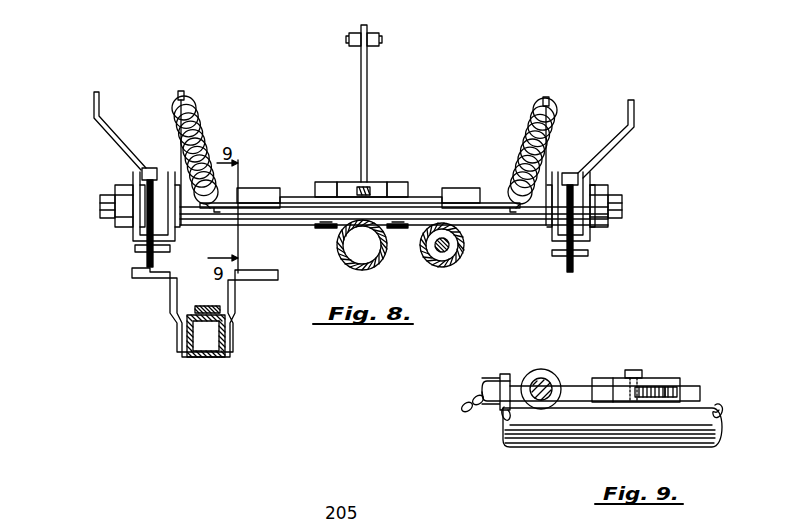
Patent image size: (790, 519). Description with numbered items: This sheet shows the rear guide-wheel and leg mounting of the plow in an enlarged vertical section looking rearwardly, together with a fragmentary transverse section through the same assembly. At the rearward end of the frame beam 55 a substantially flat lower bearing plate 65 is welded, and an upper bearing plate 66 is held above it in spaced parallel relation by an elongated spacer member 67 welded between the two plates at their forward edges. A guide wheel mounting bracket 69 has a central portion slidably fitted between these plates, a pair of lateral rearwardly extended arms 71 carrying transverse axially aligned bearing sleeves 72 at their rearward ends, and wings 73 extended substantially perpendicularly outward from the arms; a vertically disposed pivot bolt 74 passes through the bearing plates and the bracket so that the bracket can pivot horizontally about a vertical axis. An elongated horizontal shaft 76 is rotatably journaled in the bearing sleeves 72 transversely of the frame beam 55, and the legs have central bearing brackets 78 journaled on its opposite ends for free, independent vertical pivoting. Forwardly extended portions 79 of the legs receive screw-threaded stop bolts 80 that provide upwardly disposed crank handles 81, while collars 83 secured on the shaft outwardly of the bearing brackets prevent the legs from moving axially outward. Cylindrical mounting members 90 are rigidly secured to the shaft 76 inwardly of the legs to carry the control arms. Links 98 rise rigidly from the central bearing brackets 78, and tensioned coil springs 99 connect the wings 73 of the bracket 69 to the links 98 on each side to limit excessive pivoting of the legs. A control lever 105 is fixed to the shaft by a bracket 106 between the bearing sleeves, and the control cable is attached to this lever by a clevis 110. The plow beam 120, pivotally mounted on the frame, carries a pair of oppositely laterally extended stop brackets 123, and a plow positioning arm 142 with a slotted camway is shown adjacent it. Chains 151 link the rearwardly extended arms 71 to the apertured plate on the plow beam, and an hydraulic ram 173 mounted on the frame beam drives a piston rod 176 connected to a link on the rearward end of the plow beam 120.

In FIG. 8, the frame beam 55 is at (377, 257).
In FIG. 9, the frame beam 55 is at (567, 430).
In FIG. 8, the lower bearing plate 65 is at (318, 207).
In FIG. 9, the lower bearing plate 65 is at (680, 402).
In FIG. 8, the upper bearing plate 66 is at (310, 197).
In FIG. 9, the upper bearing plate 66 is at (658, 380).
In FIG. 8, the spacer member 67 is at (327, 208).
In FIG. 9, the spacer member 67 is at (680, 392).
In FIG. 8, the guide wheel mounting bracket 69 is at (272, 207).
In FIG. 9, the guide wheel mounting bracket 69 is at (583, 388).
In FIG. 9, the rearwardly extended arms 71 is at (572, 385).
In FIG. 8, the bearing sleeves 72 is at (253, 192).
In FIG. 8, the wings 73 is at (208, 208).
In FIG. 9, the wings 73 is at (630, 370).
In FIG. 8, the pivot bolt 74 is at (367, 182).
In FIG. 8, the shaft 76 is at (102, 197).
In FIG. 9, the shaft 76 is at (543, 379).
In FIG. 8, the central bearing brackets 78 is at (132, 231).
In FIG. 8, the forwardly extended portions 79 is at (135, 248).
In FIG. 8, the stop bolts 80 is at (147, 260).
In FIG. 8, the crank handles 81 is at (95, 102).
In FIG. 8, the collars 83 is at (123, 188).
In FIG. 8, the cylindrical mounting members 90 is at (218, 213).
In FIG. 8, the links 98 is at (181, 93).
In FIG. 8, the tensioned coil springs 99 is at (193, 132).
In FIG. 8, the control lever 105 is at (367, 93).
In FIG. 8, the bracket 106 is at (325, 183).
In FIG. 8, the clevis 110 is at (369, 28).
In FIG. 8, the plow beam 120 is at (203, 357).
In FIG. 8, the stop brackets 123 is at (148, 272).
In FIG. 8, the plow positioning arm 142 is at (220, 309).
In FIG. 9, the chains 151 is at (462, 410).
In FIG. 8, the hydraulic ram 173 is at (462, 257).
In FIG. 8, the piston rod 176 is at (442, 250).